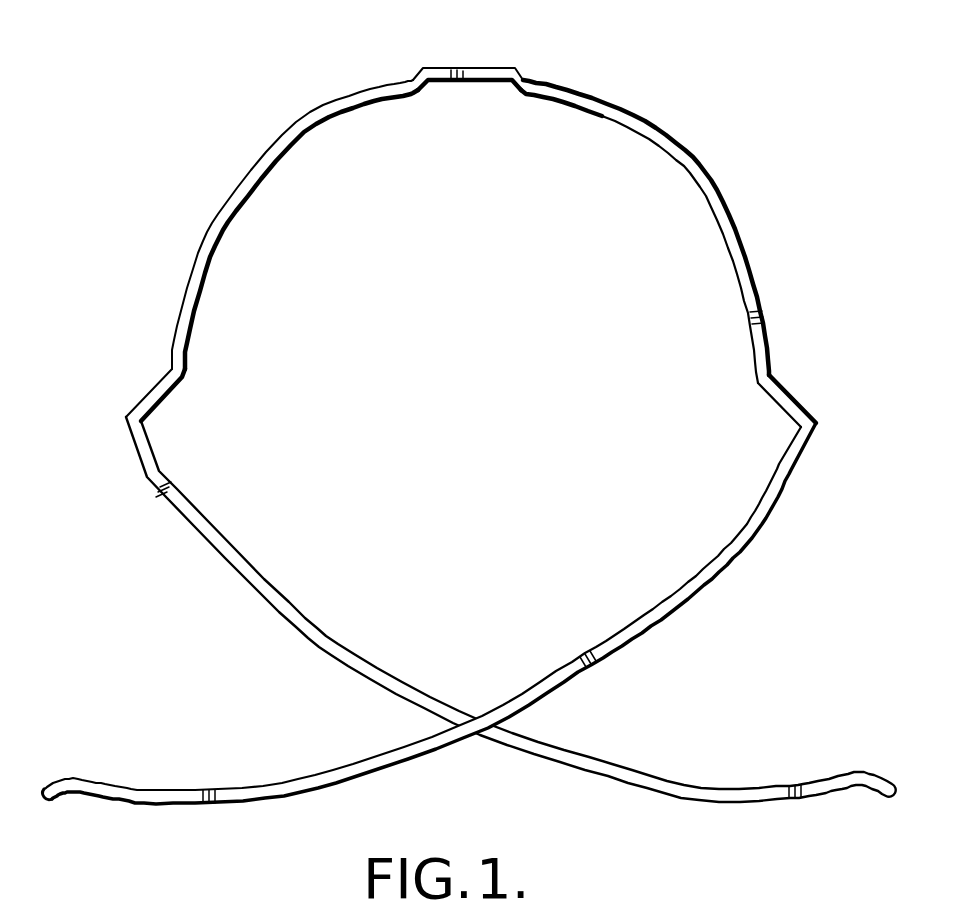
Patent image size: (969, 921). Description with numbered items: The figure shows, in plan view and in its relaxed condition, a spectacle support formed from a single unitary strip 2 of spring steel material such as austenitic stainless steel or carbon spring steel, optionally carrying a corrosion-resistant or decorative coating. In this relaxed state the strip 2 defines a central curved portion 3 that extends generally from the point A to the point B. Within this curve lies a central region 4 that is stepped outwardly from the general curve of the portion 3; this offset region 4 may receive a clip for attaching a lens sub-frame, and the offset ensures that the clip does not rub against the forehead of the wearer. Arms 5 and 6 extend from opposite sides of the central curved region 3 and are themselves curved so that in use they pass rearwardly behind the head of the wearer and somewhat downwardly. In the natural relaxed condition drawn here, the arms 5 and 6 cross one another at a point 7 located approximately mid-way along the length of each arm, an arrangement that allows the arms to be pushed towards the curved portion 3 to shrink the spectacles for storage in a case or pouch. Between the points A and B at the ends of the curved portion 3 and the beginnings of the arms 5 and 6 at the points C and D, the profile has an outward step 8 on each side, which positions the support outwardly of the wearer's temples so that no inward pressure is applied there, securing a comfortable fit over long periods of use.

The strip 2 is at (246, 90).
The central curved portion 3 is at (222, 204).
The central region 4 is at (478, 70).
The arm 5 is at (283, 597).
The arm 6 is at (668, 594).
The crossing point 7 is at (486, 753).
The outward step 8 is at (147, 413).
The point A is at (170, 370).
The point B is at (771, 378).
The point C is at (125, 418).
The point D is at (820, 422).